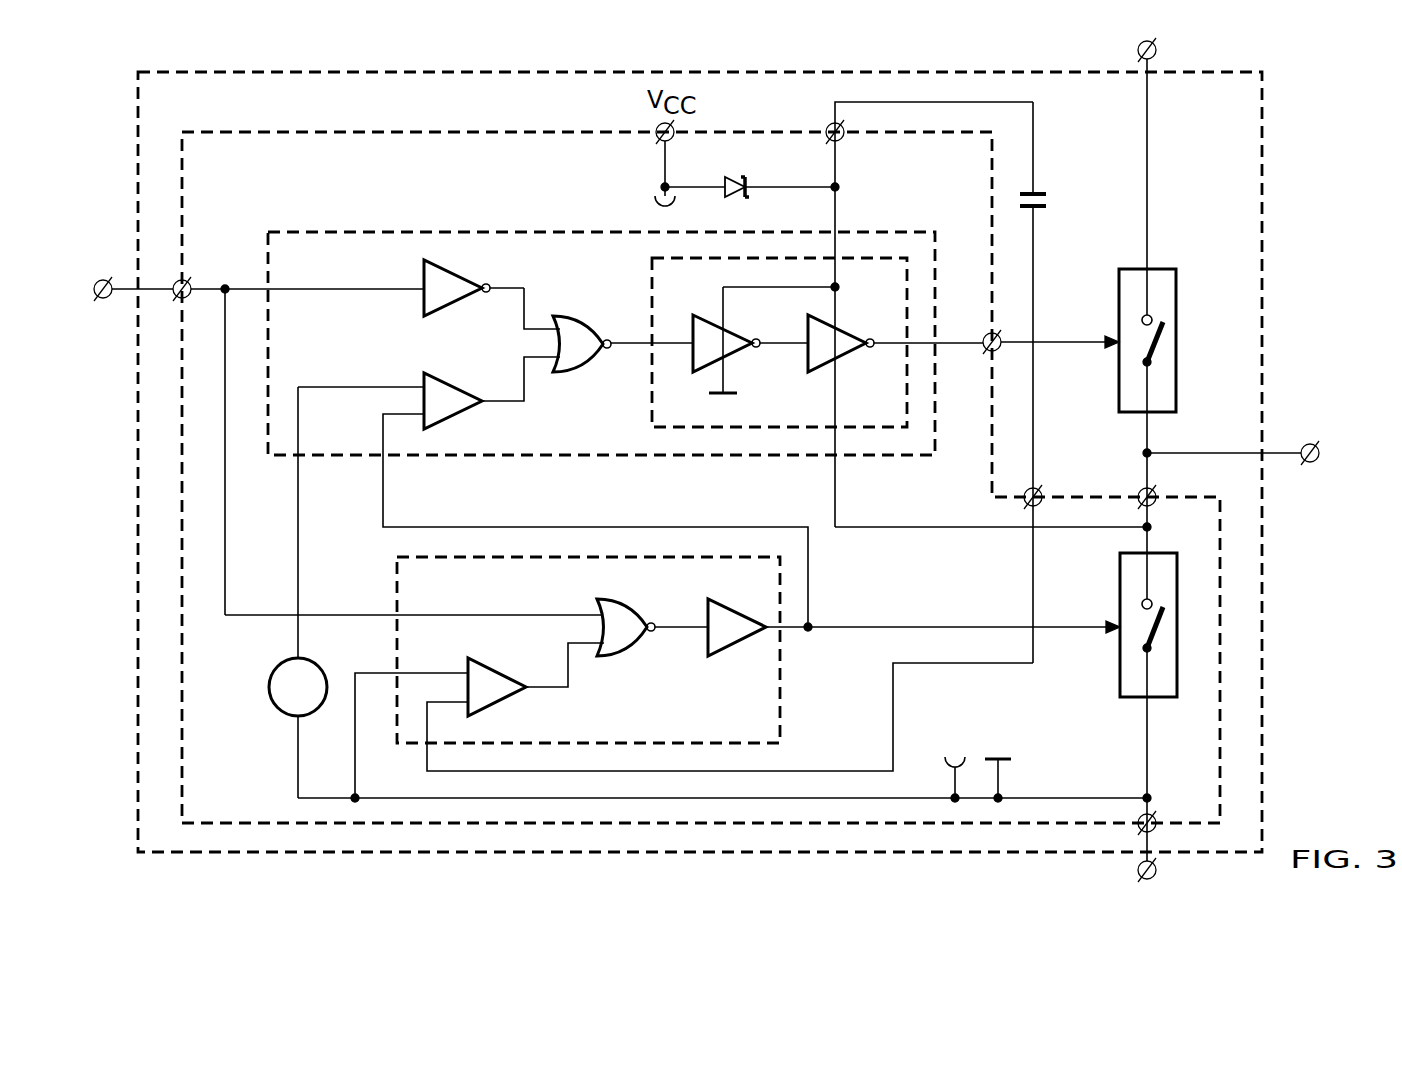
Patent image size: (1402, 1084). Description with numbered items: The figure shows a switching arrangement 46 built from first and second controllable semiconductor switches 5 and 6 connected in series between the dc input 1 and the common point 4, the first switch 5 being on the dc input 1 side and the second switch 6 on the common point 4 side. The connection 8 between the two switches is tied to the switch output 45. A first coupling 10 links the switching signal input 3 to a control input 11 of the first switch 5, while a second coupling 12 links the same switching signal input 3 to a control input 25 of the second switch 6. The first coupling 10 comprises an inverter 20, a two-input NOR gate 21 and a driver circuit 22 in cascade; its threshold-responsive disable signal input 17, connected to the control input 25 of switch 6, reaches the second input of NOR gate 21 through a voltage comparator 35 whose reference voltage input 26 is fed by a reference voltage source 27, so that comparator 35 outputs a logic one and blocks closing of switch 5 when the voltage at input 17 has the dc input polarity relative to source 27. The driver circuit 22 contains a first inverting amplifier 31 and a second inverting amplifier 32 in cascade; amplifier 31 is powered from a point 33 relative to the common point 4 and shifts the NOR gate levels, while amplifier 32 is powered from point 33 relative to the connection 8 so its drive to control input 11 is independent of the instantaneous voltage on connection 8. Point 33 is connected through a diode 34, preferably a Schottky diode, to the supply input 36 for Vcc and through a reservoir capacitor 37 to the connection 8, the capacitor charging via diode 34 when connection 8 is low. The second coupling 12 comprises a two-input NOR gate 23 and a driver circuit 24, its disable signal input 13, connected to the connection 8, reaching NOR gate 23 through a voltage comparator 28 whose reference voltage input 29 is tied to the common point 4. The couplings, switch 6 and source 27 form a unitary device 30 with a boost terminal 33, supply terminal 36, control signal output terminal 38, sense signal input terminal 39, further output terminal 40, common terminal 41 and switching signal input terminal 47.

The dc input 1 is at (1138, 50).
The switching signal input 3 is at (103, 298).
The common point 4 is at (1138, 872).
The first controllable semiconductor switch 5 is at (1178, 386).
The second controllable semiconductor switch 6 is at (1119, 672).
The connection between the switches 8 is at (1145, 433).
The first coupling 10 is at (313, 232).
The control input of the first switch 11 is at (1115, 334).
The second coupling 12 is at (780, 700).
The disable signal input 13 is at (427, 748).
The disable signal input 17 is at (383, 464).
The inverter 20 is at (424, 270).
The two-input NOR gate 21 is at (575, 318).
The driver circuit 22 is at (652, 412).
The two-input NOR gate 23 is at (615, 656).
The driver circuit 24 is at (735, 650).
The control input of the second switch 25 is at (1116, 620).
The reference voltage input of comparator 26 is at (424, 380).
The reference voltage source 27 is at (268, 687).
The voltage comparator 28 is at (503, 705).
The reference voltage input of comparator 29 is at (468, 663).
The unitary device 30 is at (182, 161).
The first inverting amplifier 31 is at (703, 315).
The second inverting amplifier 32 is at (852, 328).
The boost terminal 33 is at (828, 125).
The diode 34 is at (731, 176).
The voltage comparator 35 is at (462, 416).
The supply terminal 36 is at (658, 126).
The reservoir capacitor 37 is at (1046, 200).
The control signal output terminal 38 is at (982, 336).
The sense signal input terminal 39 is at (1026, 503).
The further output terminal 40 is at (1156, 492).
The common or ground terminal 41 is at (1155, 816).
The switch output 45 is at (1314, 444).
The switching arrangement 46 is at (138, 103).
The switching signal input terminal 47 is at (190, 285).